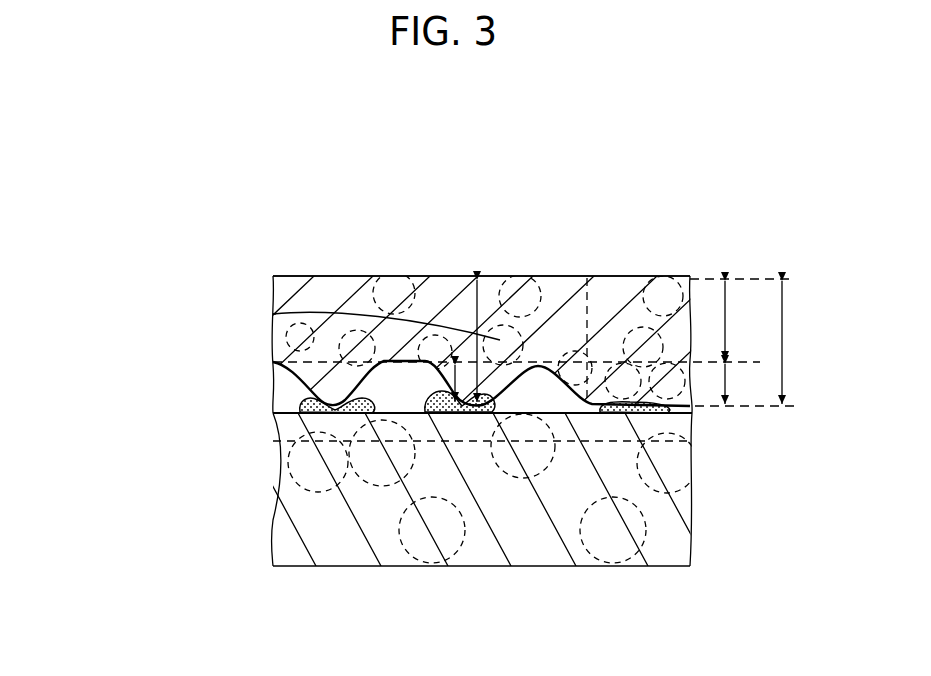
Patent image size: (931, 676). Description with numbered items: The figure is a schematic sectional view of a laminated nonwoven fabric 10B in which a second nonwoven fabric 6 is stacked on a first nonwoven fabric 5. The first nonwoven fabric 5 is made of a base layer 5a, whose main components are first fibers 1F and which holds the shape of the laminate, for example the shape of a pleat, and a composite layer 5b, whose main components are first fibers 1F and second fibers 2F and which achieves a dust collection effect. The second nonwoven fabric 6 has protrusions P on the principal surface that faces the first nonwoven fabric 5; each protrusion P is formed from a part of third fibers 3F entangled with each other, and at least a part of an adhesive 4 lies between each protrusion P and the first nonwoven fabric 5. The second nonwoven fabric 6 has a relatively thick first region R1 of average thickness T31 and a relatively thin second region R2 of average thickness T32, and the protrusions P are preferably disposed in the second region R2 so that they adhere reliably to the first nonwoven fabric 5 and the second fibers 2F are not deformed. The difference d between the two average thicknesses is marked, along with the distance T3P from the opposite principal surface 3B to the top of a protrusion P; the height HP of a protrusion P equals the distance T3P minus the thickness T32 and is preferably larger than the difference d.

The laminated nonwoven fabric 10B is at (681, 163).
The principal surface 3B is at (316, 274).
The distance T3P is at (273, 314).
The protrusion P is at (455, 393).
The adhesive 4 is at (300, 405).
The third fibers 3F is at (697, 416).
The first nonwoven fabric 5 is at (135, 424).
The composite layer 5b is at (188, 423).
The base layer 5a is at (190, 560).
The first fibers 1F is at (272, 433).
The second fibers 2F is at (272, 470).
The second nonwoven fabric 6 is at (648, 206).
The second region R2 is at (584, 262).
The first region R1 is at (690, 266).
The height of protrusion HP is at (480, 300).
The average thickness of first region T31 is at (784, 355).
The average thickness of second region T32 is at (727, 332).
The difference d is at (727, 384).